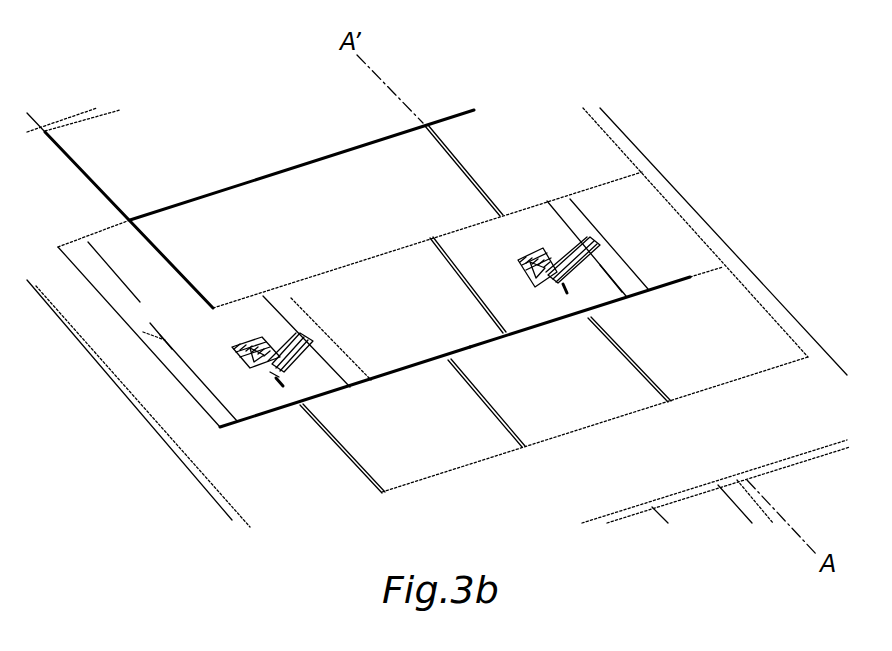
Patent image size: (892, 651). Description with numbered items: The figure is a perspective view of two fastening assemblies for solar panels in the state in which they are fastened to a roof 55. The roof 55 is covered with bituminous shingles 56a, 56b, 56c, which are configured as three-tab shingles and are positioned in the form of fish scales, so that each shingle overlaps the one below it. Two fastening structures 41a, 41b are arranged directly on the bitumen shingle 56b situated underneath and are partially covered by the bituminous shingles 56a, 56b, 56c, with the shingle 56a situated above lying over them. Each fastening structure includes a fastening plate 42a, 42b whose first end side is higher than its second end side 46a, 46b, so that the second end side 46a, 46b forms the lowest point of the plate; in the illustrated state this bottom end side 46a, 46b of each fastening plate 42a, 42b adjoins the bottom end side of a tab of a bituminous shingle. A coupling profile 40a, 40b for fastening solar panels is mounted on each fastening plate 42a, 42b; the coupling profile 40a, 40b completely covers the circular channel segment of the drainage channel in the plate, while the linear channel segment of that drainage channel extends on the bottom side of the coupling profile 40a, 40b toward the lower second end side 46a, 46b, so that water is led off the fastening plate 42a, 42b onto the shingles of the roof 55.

The roof 55 is at (640, 110).
The fastening plate 42a is at (163, 299).
The fastening plate 42b is at (536, 228).
The fastening structure 41a is at (178, 352).
The fastening structure 41b is at (624, 278).
The coupling profile 40a is at (240, 368).
The coupling profile 40b is at (605, 238).
The second end side 46a is at (275, 410).
The second end side 46b is at (613, 302).
The bituminous shingle 56a is at (409, 211).
The bituminous shingle 56b is at (425, 327).
The bituminous shingle 56c is at (580, 396).